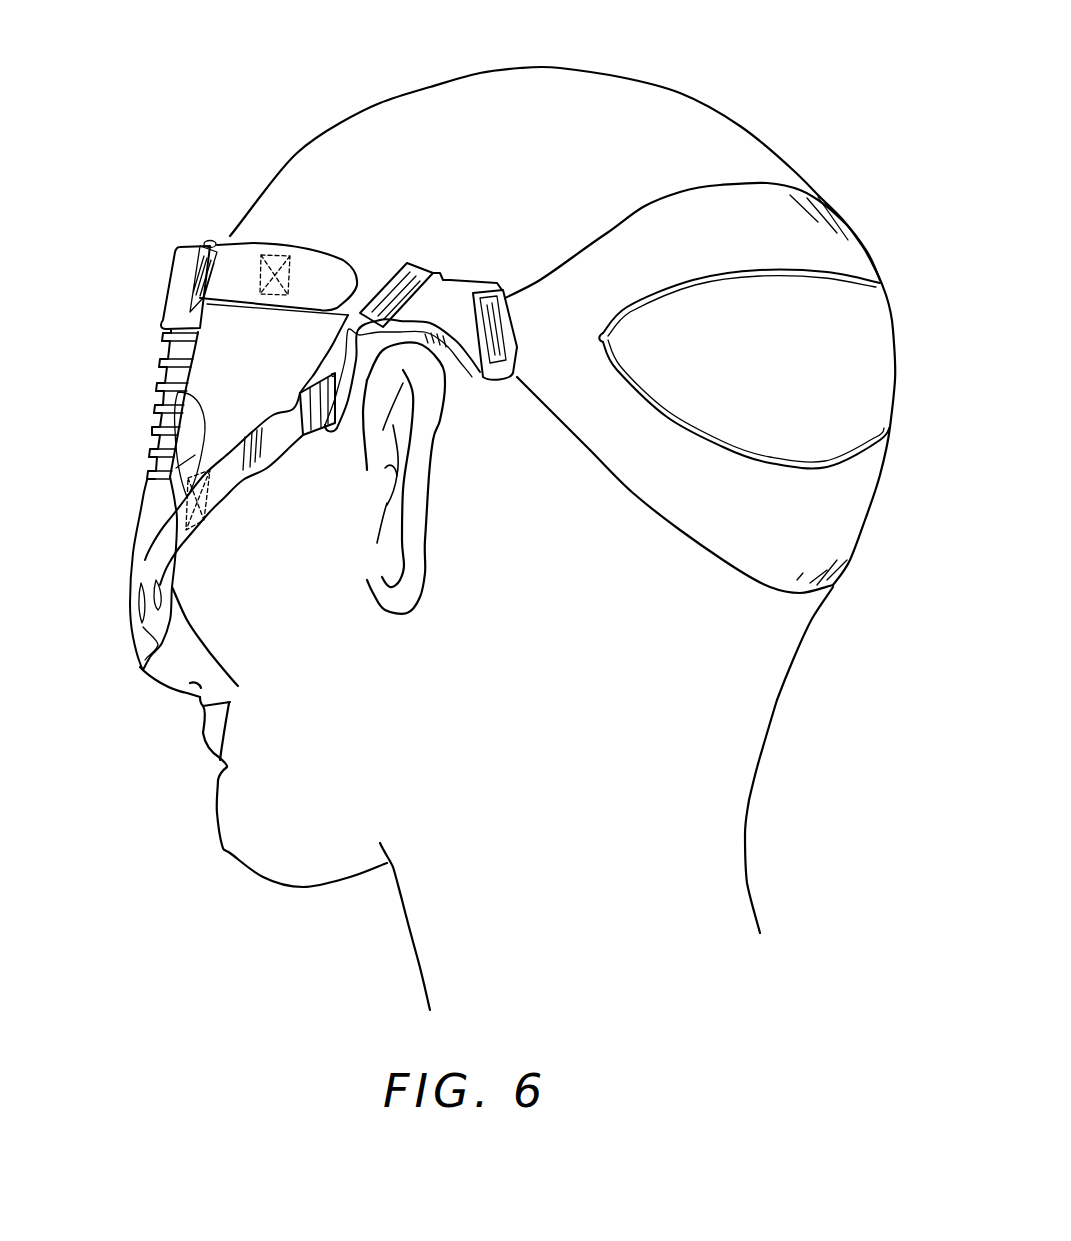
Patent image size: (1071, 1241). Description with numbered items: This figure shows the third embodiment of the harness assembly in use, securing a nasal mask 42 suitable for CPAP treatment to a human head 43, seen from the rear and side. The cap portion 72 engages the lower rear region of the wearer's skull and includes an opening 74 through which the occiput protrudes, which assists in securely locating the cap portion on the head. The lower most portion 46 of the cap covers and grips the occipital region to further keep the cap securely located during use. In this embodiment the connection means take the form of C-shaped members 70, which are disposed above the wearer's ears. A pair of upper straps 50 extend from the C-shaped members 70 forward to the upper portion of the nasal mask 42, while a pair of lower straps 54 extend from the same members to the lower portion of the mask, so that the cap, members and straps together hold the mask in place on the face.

The nasal mask 42 is at (150, 520).
The human head 43 is at (575, 92).
The lower most portion 46 is at (850, 563).
The upper straps 50 is at (307, 277).
The lower straps 54 is at (270, 437).
The C-shaped members 70 is at (447, 293).
The cap portion 72 is at (767, 203).
The opening 74 is at (845, 335).